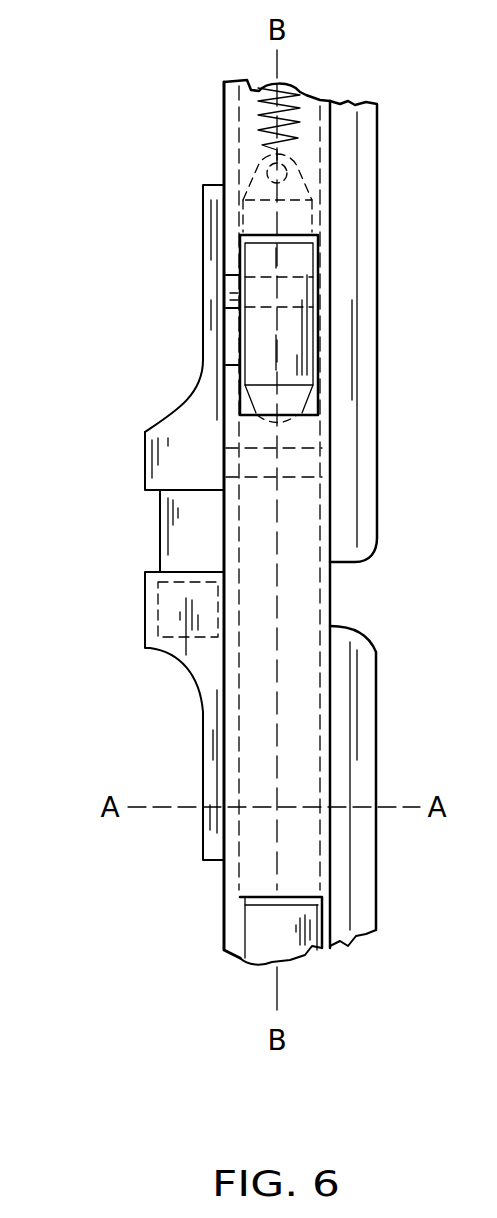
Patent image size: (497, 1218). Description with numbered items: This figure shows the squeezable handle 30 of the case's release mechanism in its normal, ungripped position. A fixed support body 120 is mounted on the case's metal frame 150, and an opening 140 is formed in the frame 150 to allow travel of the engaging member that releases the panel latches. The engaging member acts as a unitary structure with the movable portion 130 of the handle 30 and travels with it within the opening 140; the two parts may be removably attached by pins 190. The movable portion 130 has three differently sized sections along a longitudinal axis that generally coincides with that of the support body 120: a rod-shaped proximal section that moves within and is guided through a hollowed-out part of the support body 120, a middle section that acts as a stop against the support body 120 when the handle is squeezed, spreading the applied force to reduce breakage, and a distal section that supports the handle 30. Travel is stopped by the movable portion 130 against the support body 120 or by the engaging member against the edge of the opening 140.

The metal frame 150 is at (227, 133).
The movable portion 130 is at (142, 465).
The squeezable handle 30 is at (140, 595).
The fixed support body 120 is at (142, 630).
The opening 140 is at (235, 335).
The pins 190 is at (313, 287).